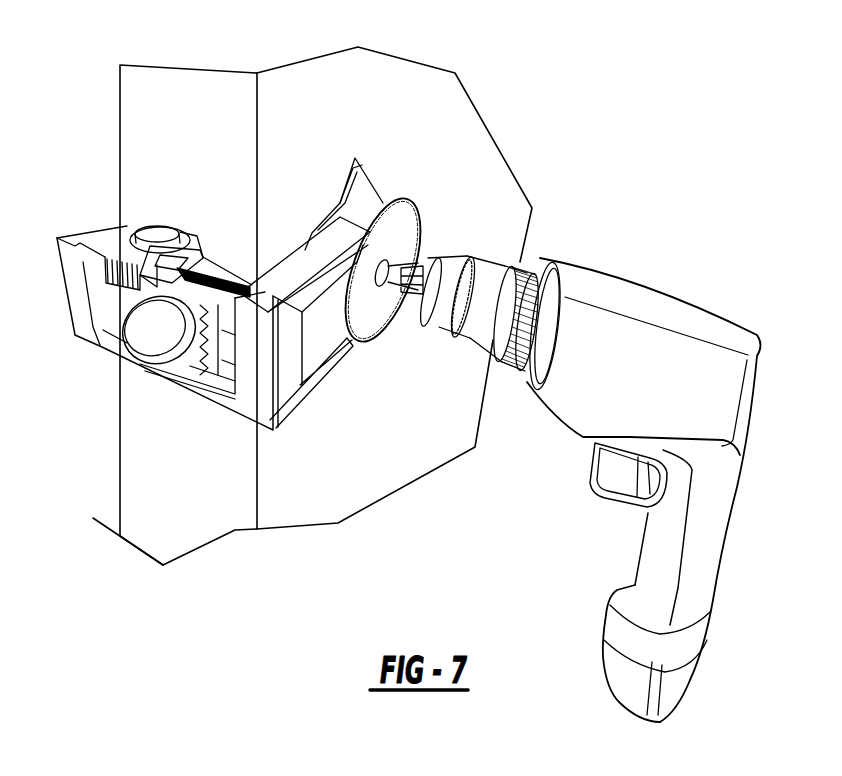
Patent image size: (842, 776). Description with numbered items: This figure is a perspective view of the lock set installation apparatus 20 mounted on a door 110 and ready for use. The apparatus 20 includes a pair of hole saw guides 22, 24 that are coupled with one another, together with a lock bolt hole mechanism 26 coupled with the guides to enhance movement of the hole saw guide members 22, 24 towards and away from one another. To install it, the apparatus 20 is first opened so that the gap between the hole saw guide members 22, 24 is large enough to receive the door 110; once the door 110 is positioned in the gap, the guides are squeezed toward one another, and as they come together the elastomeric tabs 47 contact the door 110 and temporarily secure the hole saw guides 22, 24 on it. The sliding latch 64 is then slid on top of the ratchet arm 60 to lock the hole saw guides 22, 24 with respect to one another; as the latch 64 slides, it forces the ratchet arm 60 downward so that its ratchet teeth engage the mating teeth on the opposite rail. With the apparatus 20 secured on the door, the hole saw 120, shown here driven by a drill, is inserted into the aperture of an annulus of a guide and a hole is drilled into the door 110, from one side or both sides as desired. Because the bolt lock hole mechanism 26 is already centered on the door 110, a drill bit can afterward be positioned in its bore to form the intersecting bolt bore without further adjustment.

The lock set installation apparatus 20 is at (267, 440).
The hole saw guide 22 is at (114, 209).
The hole saw guide 24 is at (317, 385).
The lock bolt hole mechanism 26 is at (140, 335).
The elastomeric tab 47 is at (337, 168).
The ratchet arm 60 is at (170, 270).
The sliding latch 64 is at (140, 237).
The door 110 is at (467, 152).
The hole saw 120 is at (370, 316).